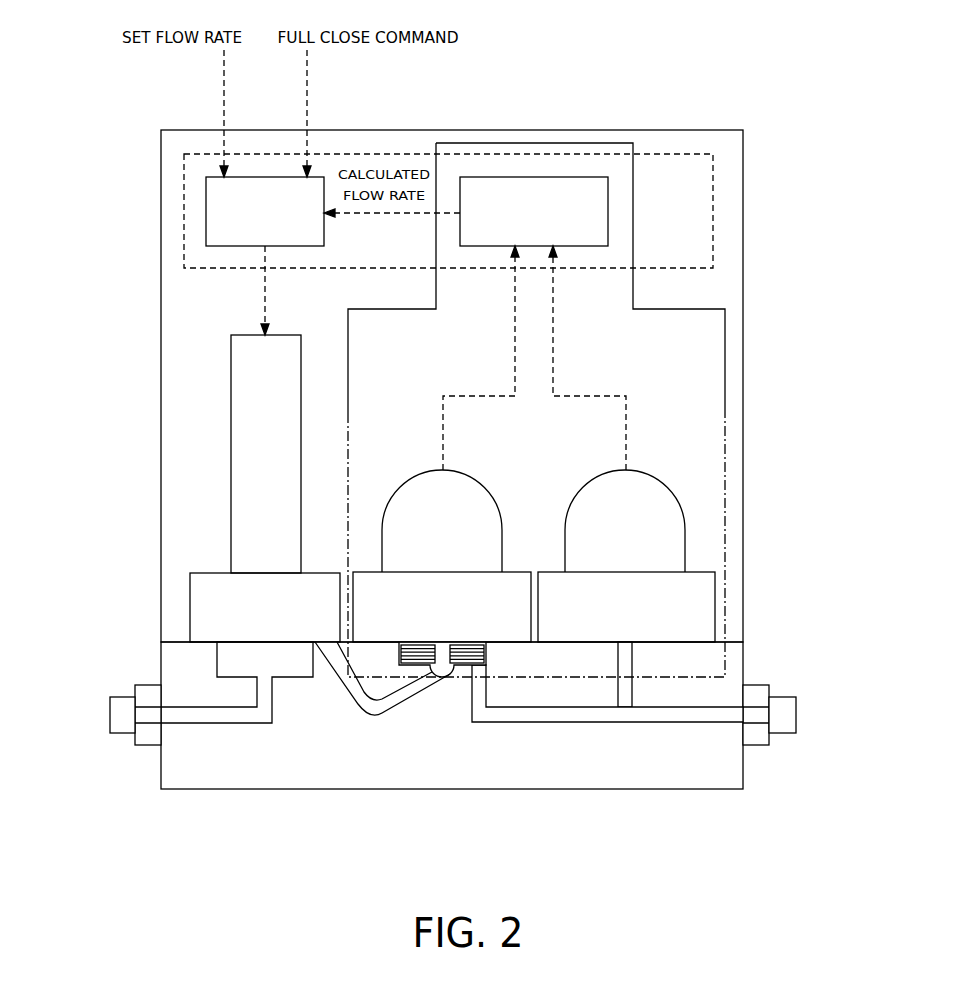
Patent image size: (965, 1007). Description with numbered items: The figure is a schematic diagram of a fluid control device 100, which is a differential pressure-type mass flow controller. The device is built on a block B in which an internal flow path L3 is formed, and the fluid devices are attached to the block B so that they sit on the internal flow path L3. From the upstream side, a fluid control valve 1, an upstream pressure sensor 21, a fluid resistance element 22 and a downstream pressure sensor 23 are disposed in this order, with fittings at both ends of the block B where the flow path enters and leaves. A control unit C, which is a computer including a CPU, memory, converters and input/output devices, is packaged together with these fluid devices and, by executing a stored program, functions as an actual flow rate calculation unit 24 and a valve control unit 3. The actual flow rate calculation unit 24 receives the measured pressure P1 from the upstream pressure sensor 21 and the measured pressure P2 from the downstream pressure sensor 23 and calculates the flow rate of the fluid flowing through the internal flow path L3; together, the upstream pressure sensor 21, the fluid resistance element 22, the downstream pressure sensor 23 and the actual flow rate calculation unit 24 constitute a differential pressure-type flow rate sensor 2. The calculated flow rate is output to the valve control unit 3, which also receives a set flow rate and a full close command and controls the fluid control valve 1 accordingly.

The fluid control device 100 is at (812, 130).
The fluid control valve 1 is at (231, 373).
The differential pressure-type flow rate sensor 2 is at (727, 335).
The valve control unit 3 is at (250, 177).
The upstream pressure sensor 21 is at (412, 473).
The fluid resistance element 22 is at (433, 667).
The downstream pressure sensor 23 is at (657, 473).
The actual flow rate calculation unit 24 is at (532, 177).
The block B is at (612, 790).
The control unit C is at (184, 212).
The internal flow path L3 is at (562, 722).
The measured pressure P1 is at (481, 358).
The measured pressure P2 is at (587, 358).